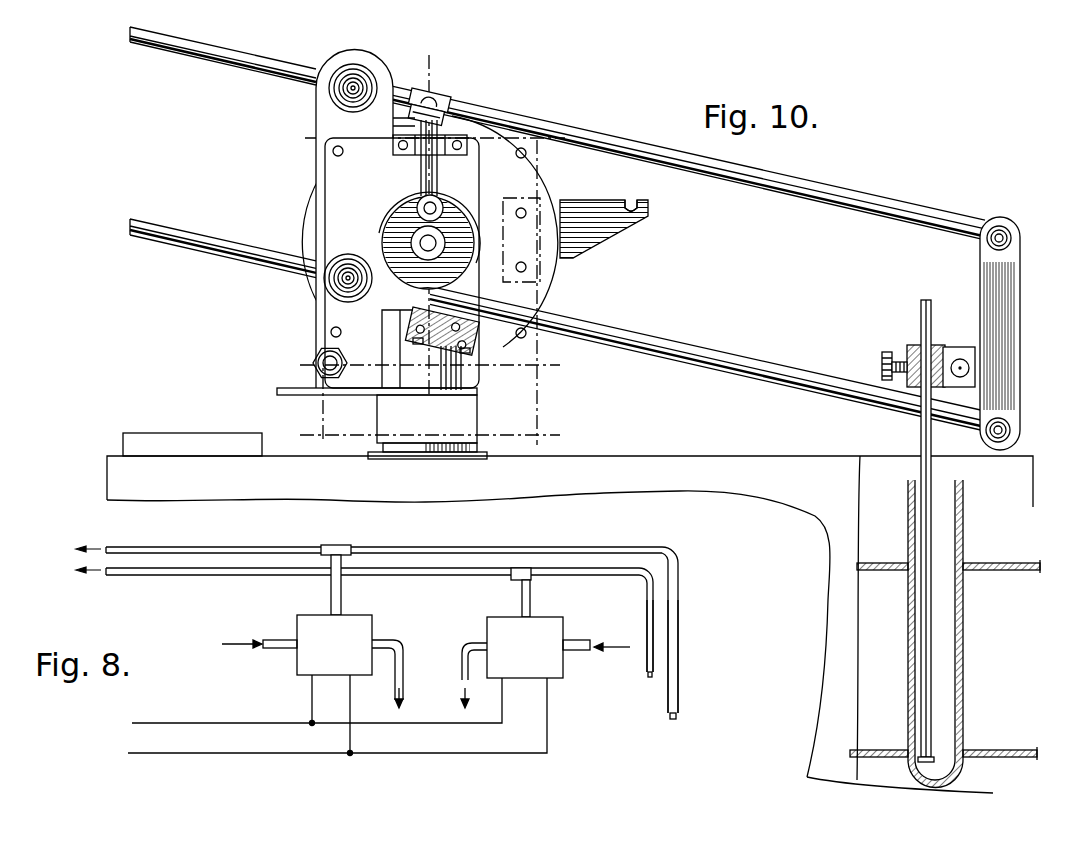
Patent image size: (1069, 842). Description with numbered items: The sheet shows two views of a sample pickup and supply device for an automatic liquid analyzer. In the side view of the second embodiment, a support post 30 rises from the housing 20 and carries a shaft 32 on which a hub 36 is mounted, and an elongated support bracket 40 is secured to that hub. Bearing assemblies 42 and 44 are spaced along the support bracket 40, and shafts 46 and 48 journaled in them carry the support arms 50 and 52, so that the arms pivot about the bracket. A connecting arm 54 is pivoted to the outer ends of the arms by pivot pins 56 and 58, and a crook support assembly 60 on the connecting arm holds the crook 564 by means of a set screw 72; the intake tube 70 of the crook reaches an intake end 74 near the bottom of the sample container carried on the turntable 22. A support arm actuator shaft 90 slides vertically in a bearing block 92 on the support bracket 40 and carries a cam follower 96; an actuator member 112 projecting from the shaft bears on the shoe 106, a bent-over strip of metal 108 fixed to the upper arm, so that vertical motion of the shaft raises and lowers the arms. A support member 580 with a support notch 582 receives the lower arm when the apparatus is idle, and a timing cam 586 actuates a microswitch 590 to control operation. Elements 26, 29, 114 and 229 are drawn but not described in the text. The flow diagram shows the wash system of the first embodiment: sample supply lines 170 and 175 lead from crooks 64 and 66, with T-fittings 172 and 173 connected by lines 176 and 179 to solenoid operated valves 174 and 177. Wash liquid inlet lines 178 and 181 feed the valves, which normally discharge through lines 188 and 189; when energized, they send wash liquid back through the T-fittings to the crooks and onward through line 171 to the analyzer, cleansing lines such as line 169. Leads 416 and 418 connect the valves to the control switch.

In FIG. 10, the housing 20 is at (107, 470).
In FIG. 10, the turntable 22 is at (940, 633).
In FIG. 10, the upper pipe 26 is at (982, 572).
In FIG. 10, the lower pipe 29 is at (990, 750).
In FIG. 10, the support post 30 is at (462, 421).
In FIG. 10, the shaft 32 is at (456, 376).
In FIG. 10, the hub 36 is at (476, 367).
In FIG. 10, the support bracket 40 is at (323, 167).
In FIG. 10, the bearing assembly 42 is at (340, 63).
In FIG. 10, the bearing assembly 44 is at (328, 285).
In FIG. 10, the shaft 46 is at (358, 82).
In FIG. 10, the shaft 48 is at (352, 285).
In FIG. 10, the support arm 50 is at (778, 196).
In FIG. 10, the support arm 52 is at (684, 347).
In FIG. 10, the connecting arm 54 is at (1012, 305).
In FIG. 10, the pivot pin 56 is at (1003, 226).
In FIG. 10, the pivot pin 58 is at (1012, 422).
In FIG. 10, the crook support assembly 60 is at (915, 347).
In FIG. 10, the set screw 72 is at (880, 366).
In FIG. 10, the sample intake tube 70 is at (906, 752).
In FIG. 10, the intake end 74 is at (912, 766).
In FIG. 10, the support arm actuator shaft 90 is at (418, 186).
In FIG. 10, the bearing block 92 is at (424, 147).
In FIG. 10, the cam follower 96 is at (424, 209).
In FIG. 10, the shoe 106 is at (450, 106).
In FIG. 10, the bent-over strip of metal 108 is at (424, 88).
In FIG. 10, the actuator member 112 is at (392, 121).
In FIG. 10, the disk 114 is at (397, 242).
In FIG. 10, the mounting plate 229 is at (312, 396).
In FIG. 10, the crook 564 is at (940, 667).
In FIG. 10, the support member 580 is at (612, 235).
In FIG. 10, the support notch 582 is at (636, 204).
In FIG. 10, the timing cam 586 is at (469, 219).
In FIG. 10, the microswitch 590 is at (486, 324).
In FIG. 8, the sample intake crook 64 is at (645, 620).
In FIG. 8, the sample intake crook 66 is at (678, 620).
In FIG. 8, the line 169 is at (134, 577).
In FIG. 8, the sample supply line 170 is at (612, 584).
In FIG. 8, the line 171 is at (146, 548).
In FIG. 8, the T-fitting 172 is at (333, 546).
In FIG. 8, the T-fitting 173 is at (522, 569).
In FIG. 8, the solenoid operated valve 174 is at (306, 667).
In FIG. 8, the sample supply line 175 is at (612, 551).
In FIG. 8, the line 176 is at (342, 594).
In FIG. 8, the solenoid operated valve 177 is at (553, 678).
In FIG. 8, the wash liquid inlet line 178 is at (275, 636).
In FIG. 8, the line 179 is at (522, 598).
In FIG. 8, the wash liquid inlet line 181 is at (582, 651).
In FIG. 8, the line 188 is at (392, 641).
In FIG. 8, the line 189 is at (470, 644).
In FIG. 8, the lead 416 is at (212, 724).
In FIG. 8, the lead 418 is at (212, 756).